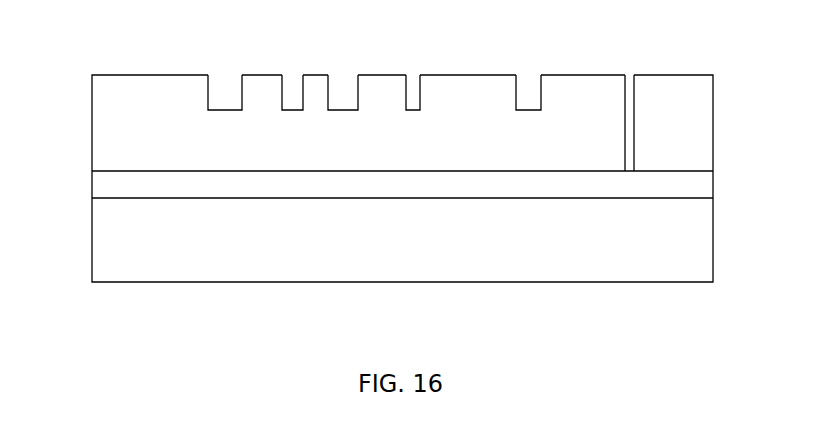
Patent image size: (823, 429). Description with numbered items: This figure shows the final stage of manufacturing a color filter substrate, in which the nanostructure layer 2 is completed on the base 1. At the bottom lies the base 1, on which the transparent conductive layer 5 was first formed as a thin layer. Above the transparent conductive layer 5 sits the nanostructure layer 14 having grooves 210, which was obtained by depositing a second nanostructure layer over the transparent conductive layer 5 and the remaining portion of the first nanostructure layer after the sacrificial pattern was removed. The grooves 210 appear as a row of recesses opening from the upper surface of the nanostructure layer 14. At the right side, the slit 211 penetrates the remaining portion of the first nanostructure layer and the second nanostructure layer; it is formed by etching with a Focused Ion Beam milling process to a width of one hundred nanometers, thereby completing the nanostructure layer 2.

The base 1 is at (673, 253).
The nanostructure layer 2 is at (693, 131).
The transparent conductive layer 5 is at (220, 188).
The nanostructure layer having grooves 14 is at (115, 124).
The grooves 210 is at (230, 98).
The slit 211 is at (627, 110).